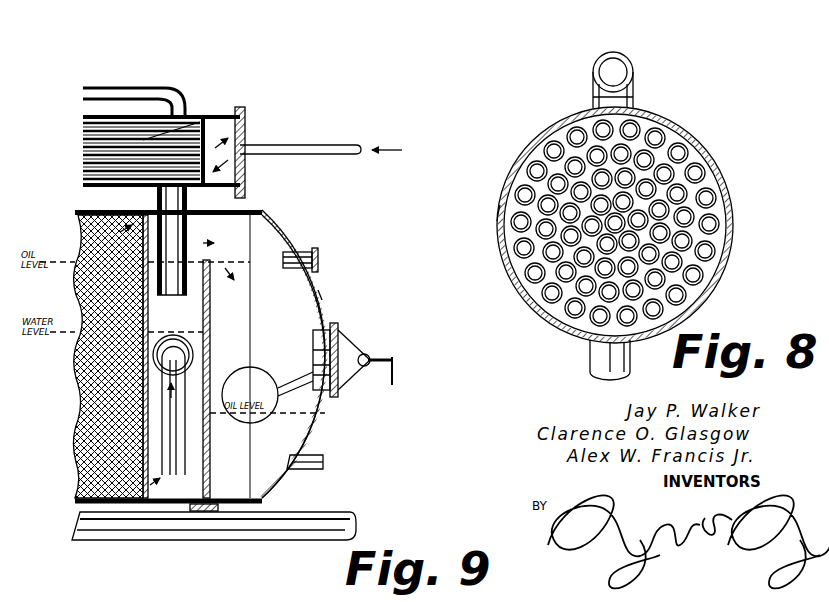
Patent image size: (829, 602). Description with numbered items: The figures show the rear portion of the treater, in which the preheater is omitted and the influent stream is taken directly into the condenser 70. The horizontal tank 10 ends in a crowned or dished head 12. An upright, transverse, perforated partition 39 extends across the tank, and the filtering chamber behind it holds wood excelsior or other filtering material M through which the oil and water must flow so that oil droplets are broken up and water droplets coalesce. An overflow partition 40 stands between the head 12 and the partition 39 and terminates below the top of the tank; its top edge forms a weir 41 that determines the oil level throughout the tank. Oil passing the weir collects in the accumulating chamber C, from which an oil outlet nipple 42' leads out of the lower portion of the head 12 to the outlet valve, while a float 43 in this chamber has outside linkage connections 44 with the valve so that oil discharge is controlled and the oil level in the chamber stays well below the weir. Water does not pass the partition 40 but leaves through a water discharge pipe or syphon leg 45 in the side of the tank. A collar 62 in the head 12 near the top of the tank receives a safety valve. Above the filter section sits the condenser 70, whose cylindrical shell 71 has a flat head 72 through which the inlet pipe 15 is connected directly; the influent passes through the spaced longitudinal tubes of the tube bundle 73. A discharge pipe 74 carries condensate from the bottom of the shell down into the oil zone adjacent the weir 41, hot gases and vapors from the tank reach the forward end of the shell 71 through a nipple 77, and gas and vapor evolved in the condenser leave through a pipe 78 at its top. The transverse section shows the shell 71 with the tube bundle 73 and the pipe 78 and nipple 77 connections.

In FIG. 9, the tank 10 is at (88, 208).
In FIG. 9, the head 12 is at (295, 242).
In FIG. 9, the inlet pipe 15 is at (289, 143).
In FIG. 9, the perforated partition 39 is at (150, 305).
In FIG. 9, the overflow partition 40 is at (208, 318).
In FIG. 9, the weir 41 is at (215, 258).
In FIG. 9, the oil outlet nipple 42' is at (343, 435).
In FIG. 9, the float 43 is at (265, 388).
In FIG. 9, the linkage connections 44 is at (396, 370).
In FIG. 9, the water discharge pipe or syphon leg 45 is at (165, 412).
In FIG. 9, the collar 62 is at (318, 260).
In FIG. 9, the condenser 70 is at (192, 115).
In FIG. 8, the condenser 70 is at (733, 198).
In FIG. 8, the shell 71 is at (497, 225).
In FIG. 9, the head 72 is at (247, 123).
In FIG. 9, the tube bundle 73 is at (92, 143).
In FIG. 8, the tube bundle 73 is at (540, 287).
In FIG. 9, the discharge pipe 74 is at (187, 228).
In FIG. 8, the nipple 77 is at (588, 356).
In FIG. 9, the pipe 78 is at (100, 85).
In FIG. 8, the pipe 78 is at (637, 62).
In FIG. 9, the accumulating chamber C is at (316, 294).
In FIG. 9, the filtering material M is at (75, 302).